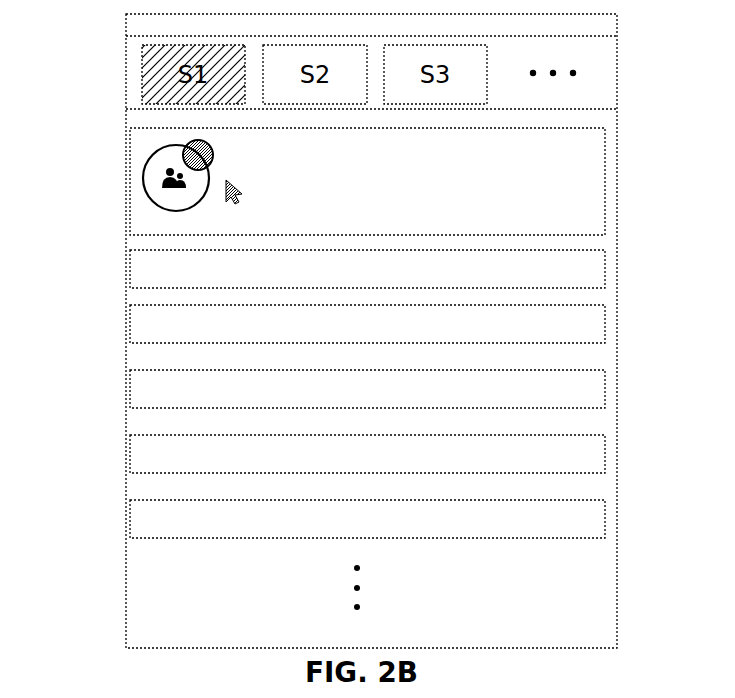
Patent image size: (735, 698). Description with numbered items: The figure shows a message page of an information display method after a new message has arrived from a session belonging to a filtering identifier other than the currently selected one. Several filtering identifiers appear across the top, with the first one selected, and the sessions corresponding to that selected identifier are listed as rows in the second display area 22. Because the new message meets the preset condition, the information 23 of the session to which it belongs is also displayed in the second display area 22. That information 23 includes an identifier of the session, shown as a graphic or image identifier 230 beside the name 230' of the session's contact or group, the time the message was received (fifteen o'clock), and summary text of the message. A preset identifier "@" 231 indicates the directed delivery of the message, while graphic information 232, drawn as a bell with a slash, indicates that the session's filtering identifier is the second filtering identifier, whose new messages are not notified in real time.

The second display area 22 is at (603, 552).
The information of the session to which the new message belongs 23 is at (597, 220).
The graphic or image identifier of the session 230 is at (113, 178).
The name of contact or group 230' is at (468, 141).
The preset identifier "@" 231 is at (187, 147).
The graphic information for identifying the second filtering identifier 232 is at (215, 197).